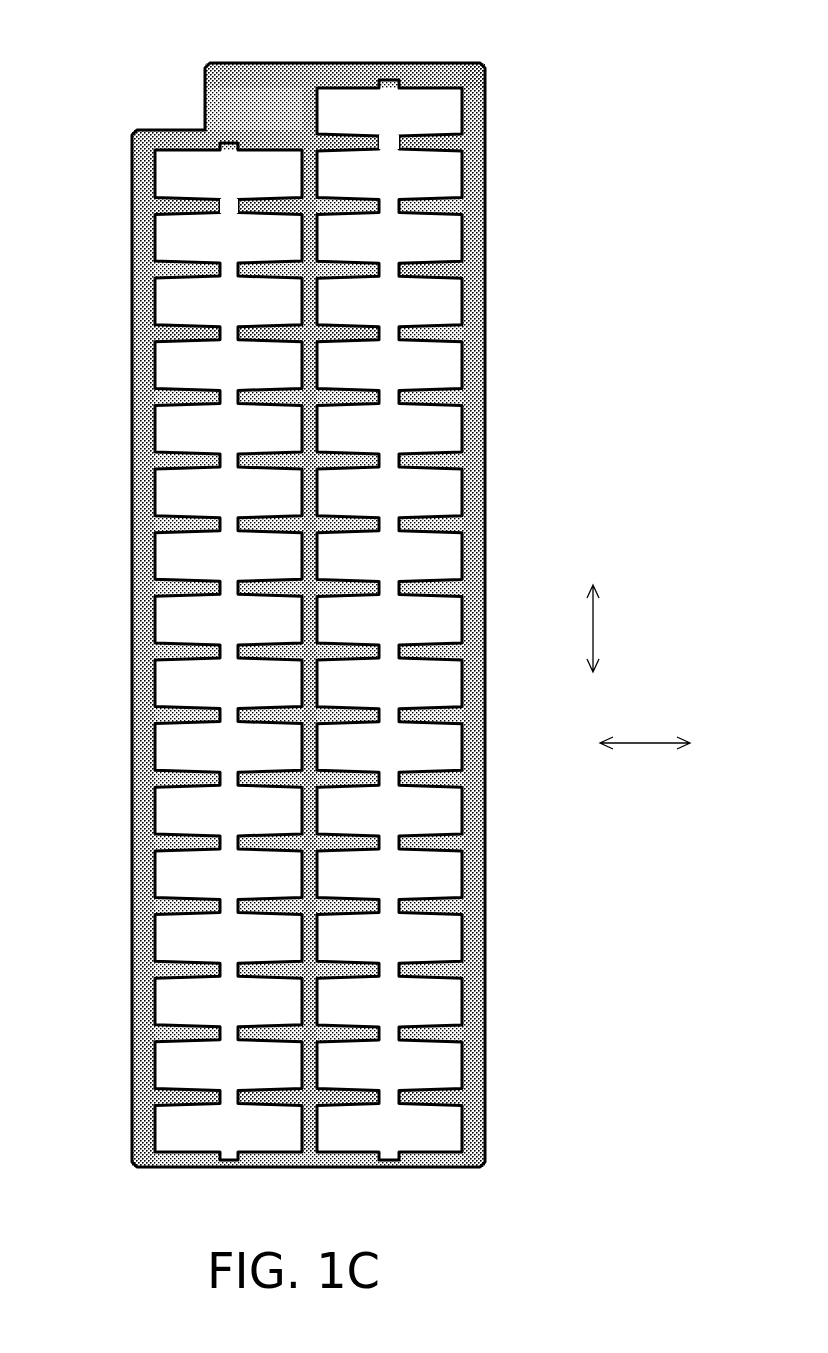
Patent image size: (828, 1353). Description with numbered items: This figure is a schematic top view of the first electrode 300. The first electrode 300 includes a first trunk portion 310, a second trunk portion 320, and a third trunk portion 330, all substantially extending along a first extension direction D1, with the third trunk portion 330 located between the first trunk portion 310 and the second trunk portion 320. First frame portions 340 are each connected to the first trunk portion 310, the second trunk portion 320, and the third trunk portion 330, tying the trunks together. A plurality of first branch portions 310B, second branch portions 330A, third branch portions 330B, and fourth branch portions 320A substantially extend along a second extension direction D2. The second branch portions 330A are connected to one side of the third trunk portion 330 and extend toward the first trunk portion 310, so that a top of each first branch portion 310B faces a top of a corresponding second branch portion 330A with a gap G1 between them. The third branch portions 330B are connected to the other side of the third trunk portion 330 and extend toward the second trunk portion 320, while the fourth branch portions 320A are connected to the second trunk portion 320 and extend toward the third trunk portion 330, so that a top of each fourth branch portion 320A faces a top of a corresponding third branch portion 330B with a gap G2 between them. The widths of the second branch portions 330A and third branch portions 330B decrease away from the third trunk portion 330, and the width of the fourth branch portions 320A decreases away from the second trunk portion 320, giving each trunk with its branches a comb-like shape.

The first electrode 300 is at (677, 1227).
The first trunk portion 310 is at (132, 234).
The first branch portions 310B is at (184, 342).
The second trunk portion 320 is at (482, 330).
The fourth branch portions 320A is at (434, 279).
The third trunk portion 330 is at (311, 1168).
The second branch portions 330A is at (248, 343).
The third branch portions 330B is at (358, 345).
The first frame portions 340 is at (258, 63).
The gap G1 is at (230, 201).
The gap G2 is at (388, 135).
The first extension direction D1 is at (608, 628).
The second extension direction D2 is at (645, 724).